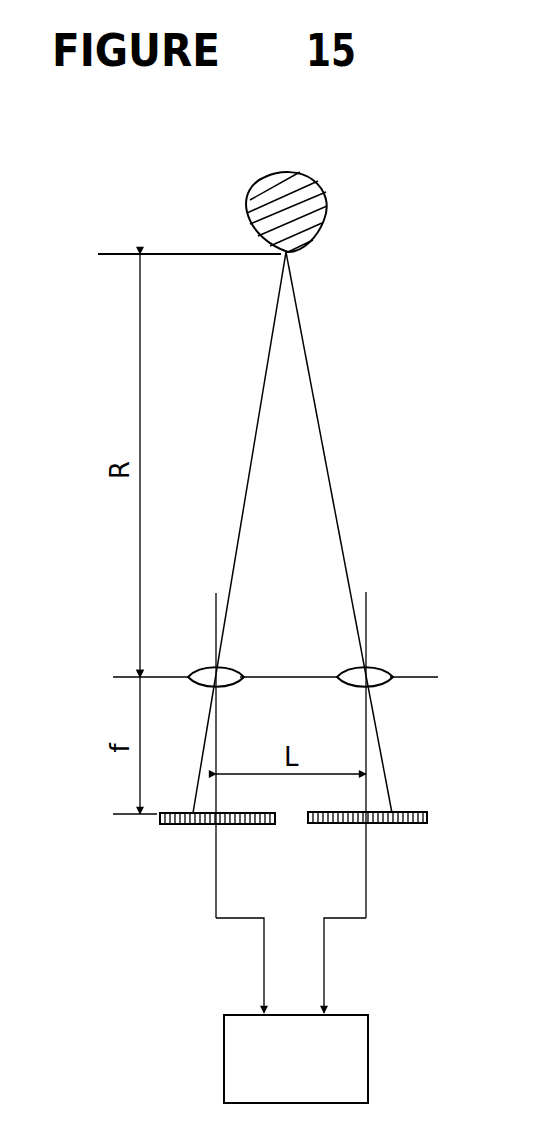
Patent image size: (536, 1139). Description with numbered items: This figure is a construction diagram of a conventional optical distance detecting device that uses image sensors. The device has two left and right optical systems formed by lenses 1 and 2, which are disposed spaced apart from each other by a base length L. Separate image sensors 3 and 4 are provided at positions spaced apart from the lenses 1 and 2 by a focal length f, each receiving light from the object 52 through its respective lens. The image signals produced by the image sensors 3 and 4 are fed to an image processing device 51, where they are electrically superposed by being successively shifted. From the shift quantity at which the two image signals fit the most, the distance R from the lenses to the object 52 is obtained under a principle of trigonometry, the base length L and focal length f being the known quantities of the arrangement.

The lens 1 is at (232, 668).
The lens 2 is at (378, 668).
The image sensor 3 is at (178, 826).
The image sensor 4 is at (398, 825).
The image processing device 51 is at (368, 1048).
The object 52 is at (325, 203).